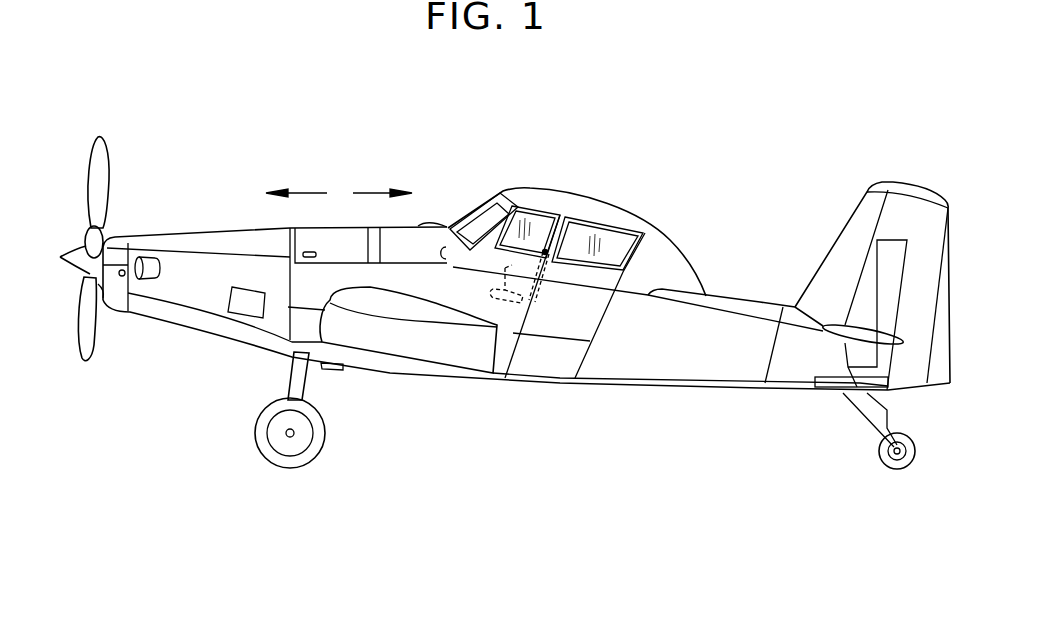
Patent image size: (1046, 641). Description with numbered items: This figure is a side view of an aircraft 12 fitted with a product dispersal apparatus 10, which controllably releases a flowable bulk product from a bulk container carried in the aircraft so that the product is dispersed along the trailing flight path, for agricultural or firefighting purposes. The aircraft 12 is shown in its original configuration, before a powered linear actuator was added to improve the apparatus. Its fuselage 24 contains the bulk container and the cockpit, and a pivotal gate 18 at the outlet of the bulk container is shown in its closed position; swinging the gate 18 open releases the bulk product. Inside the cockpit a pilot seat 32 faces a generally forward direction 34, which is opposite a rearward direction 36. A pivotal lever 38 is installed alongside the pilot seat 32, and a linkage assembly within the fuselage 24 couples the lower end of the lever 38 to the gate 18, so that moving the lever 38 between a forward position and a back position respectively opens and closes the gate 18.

The product dispersal apparatus 10 is at (749, 152).
The aircraft 12 is at (604, 198).
The pivotal gate 18 is at (333, 370).
The fuselage 24 is at (600, 386).
The pilot seat 32 is at (537, 283).
The forward direction 34 is at (302, 193).
The rearward direction 36 is at (370, 193).
The pivotal lever 38 is at (492, 273).